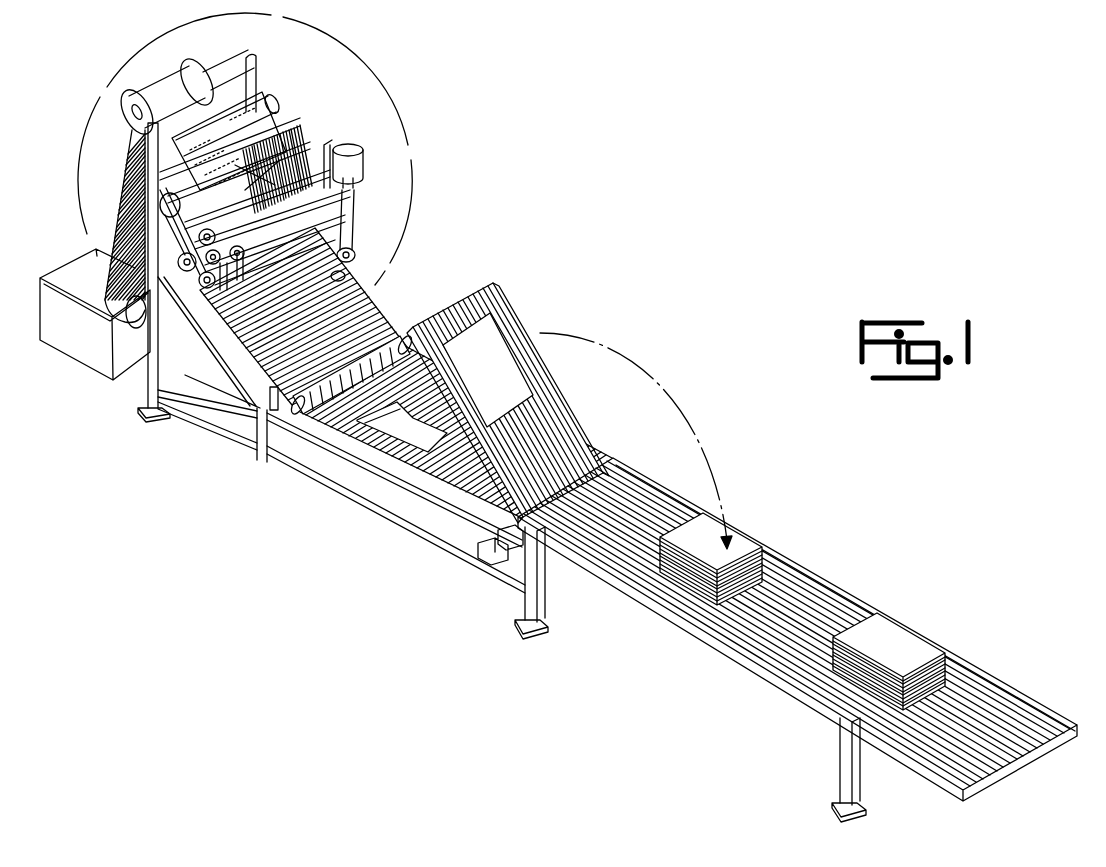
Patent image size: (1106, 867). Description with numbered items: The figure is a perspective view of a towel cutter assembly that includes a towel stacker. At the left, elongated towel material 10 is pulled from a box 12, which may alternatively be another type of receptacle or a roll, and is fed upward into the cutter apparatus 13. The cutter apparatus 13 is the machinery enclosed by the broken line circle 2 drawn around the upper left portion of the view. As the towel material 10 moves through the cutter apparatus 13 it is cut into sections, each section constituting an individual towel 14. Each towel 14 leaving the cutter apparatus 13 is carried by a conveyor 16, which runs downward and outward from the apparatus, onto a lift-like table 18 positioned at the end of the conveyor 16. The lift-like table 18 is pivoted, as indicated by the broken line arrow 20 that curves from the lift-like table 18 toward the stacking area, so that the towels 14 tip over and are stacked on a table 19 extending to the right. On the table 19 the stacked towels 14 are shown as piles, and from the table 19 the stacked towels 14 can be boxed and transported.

The broken line circle 2 is at (413, 145).
The elongated towel material 10 is at (126, 170).
The box 12 is at (90, 355).
The cutter apparatus 13 is at (286, 100).
The towel 14 is at (512, 380).
The conveyor 16 is at (376, 332).
The lift-like table 18 is at (502, 300).
The table 19 is at (826, 587).
The broken line arrow 20 is at (672, 390).